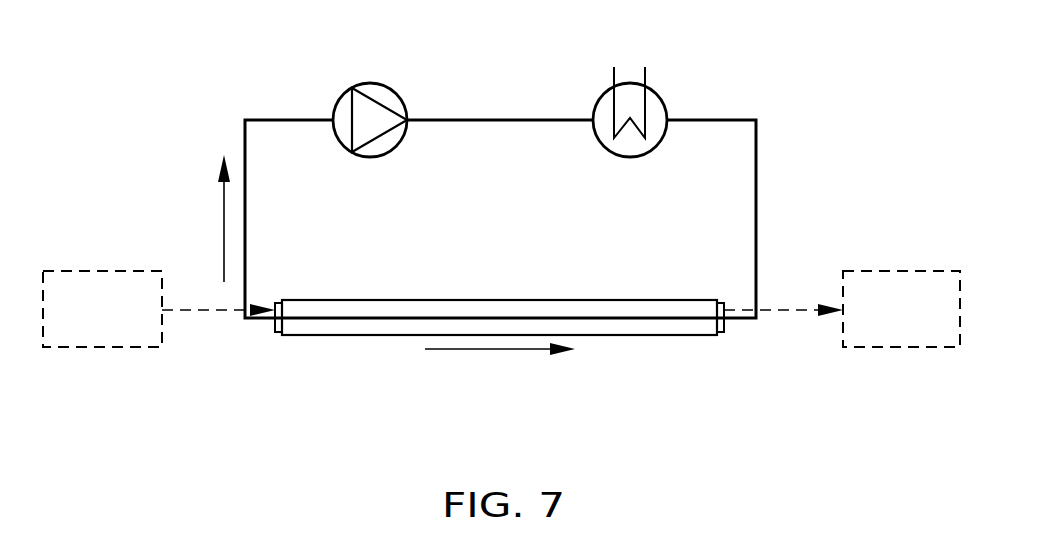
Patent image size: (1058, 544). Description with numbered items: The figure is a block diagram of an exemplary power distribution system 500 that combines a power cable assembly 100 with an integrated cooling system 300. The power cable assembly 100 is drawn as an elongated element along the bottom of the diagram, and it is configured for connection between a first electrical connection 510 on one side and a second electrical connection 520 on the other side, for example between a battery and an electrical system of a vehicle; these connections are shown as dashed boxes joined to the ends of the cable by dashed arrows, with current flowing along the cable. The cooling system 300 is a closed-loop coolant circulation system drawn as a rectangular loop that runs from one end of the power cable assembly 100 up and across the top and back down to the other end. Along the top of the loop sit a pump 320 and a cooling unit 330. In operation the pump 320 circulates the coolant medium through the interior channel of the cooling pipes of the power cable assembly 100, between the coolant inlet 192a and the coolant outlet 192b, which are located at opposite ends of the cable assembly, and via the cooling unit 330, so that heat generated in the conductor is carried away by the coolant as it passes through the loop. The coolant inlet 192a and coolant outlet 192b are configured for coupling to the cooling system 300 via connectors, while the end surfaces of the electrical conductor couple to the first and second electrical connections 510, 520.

The power distribution system 500 is at (206, 70).
The cooling system 300 is at (757, 223).
The pump 320 is at (347, 88).
The cooling unit 330 is at (607, 87).
The power cable assembly 100 is at (502, 381).
The coolant inlet 192a is at (723, 330).
The coolant outlet 192b is at (277, 325).
The first electrical connection 510 is at (159, 309).
The second electrical connection 520 is at (842, 309).